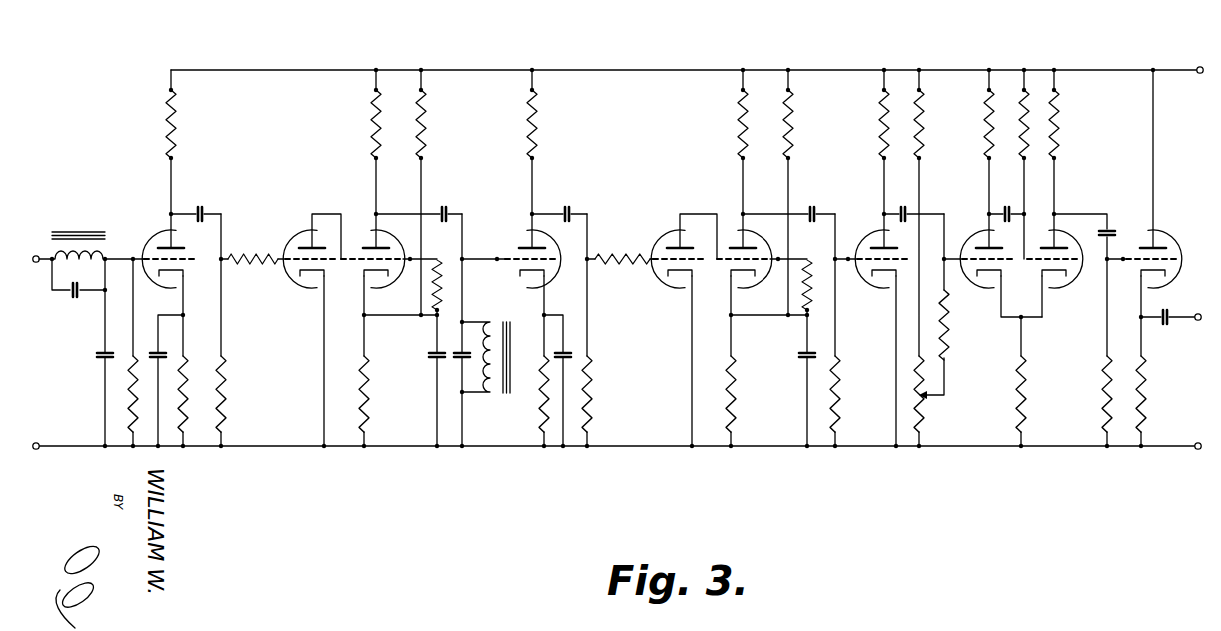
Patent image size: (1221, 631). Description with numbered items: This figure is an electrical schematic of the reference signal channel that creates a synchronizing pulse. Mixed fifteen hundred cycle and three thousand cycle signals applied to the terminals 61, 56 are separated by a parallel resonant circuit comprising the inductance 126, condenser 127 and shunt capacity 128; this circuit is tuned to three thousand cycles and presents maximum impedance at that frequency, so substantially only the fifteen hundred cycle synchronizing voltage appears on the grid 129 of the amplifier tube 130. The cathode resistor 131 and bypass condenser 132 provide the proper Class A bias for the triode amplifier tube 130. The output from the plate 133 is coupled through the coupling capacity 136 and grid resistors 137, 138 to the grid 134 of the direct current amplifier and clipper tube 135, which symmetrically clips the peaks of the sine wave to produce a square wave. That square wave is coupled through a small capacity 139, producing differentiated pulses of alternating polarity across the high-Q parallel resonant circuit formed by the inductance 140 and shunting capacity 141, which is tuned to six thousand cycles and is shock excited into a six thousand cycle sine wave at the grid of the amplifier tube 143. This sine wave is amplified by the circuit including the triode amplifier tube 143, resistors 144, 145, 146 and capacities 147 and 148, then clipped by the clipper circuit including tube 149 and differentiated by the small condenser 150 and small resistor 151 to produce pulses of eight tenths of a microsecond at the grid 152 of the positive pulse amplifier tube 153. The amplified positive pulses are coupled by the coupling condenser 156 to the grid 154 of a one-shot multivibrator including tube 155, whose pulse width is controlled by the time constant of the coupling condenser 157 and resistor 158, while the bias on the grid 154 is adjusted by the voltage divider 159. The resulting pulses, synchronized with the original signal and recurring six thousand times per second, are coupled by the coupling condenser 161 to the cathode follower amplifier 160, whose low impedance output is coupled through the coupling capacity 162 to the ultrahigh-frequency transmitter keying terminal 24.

The ultrahigh-frequency transmitter keying terminal 24 is at (1200, 313).
The terminal 56 is at (39, 443).
The terminal 61 is at (38, 255).
The inductance 126 is at (84, 229).
The condenser 127 is at (72, 300).
The shunt capacity 128 is at (100, 360).
The grid 129 is at (186, 276).
The amplifier tube 130 is at (168, 237).
The cathode resistor 131 is at (187, 372).
The bypass condenser 132 is at (157, 350).
The plate 133 is at (185, 247).
The grid 134 is at (302, 292).
The clipper tube 135 is at (356, 317).
The coupling capacity 136 is at (207, 209).
The grid resistor 137 is at (225, 384).
The grid resistor 138 is at (238, 264).
The small capacity 139 is at (447, 207).
The inductance 140 is at (515, 331).
The shunting capacity 141 is at (455, 361).
The amplifier tube 143 is at (519, 235).
The resistor 144 is at (540, 122).
The resistor 145 is at (540, 408).
The resistor 146 is at (590, 380).
The capacity 147 is at (573, 348).
The capacity 148 is at (574, 206).
The clipper tube 149 is at (669, 227).
The small condenser 150 is at (812, 206).
The small resistor 151 is at (838, 395).
The grid 152 is at (868, 282).
The positive pulse amplifier tube 153 is at (878, 314).
The grid 154 is at (1034, 312).
The multivibrator tube 155 is at (1064, 230).
The coupling condenser 156 is at (908, 207).
The coupling condenser 157 is at (1013, 206).
The resistor 158 is at (1022, 112).
The voltage divider 159 is at (932, 412).
The cathode follower amplifier 160 is at (1173, 233).
The coupling condenser 161 is at (1110, 228).
The coupling capacity 162 is at (1168, 326).